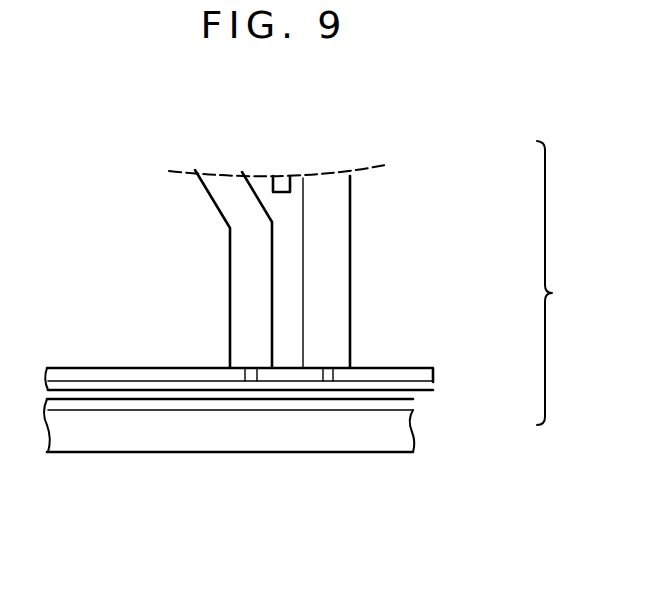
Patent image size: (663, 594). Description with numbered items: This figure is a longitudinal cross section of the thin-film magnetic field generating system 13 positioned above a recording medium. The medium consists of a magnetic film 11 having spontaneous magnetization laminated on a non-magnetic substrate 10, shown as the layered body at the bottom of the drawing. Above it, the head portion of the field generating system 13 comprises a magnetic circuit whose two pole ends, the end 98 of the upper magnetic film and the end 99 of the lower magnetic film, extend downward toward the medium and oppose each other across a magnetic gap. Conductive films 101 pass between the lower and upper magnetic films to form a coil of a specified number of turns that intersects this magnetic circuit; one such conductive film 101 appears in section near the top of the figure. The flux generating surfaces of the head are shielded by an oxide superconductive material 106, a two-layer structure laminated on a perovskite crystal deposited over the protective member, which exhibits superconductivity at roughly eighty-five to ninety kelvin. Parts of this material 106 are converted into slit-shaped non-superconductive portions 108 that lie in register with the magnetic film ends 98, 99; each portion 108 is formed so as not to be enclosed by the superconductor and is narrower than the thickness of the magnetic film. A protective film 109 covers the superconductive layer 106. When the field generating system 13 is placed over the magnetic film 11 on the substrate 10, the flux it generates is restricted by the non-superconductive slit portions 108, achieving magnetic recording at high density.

The non-magnetic substrate 10 is at (390, 443).
The magnetic film 11 is at (413, 403).
The field generating system 13 is at (564, 283).
The end of upper magnetic film 98 is at (227, 282).
The end of lower magnetic film 99 is at (343, 242).
The conductive films 101 is at (283, 175).
The oxide superconductive material 106 is at (415, 368).
The non-superconductive portions 108 is at (247, 382).
The protective film 109 is at (434, 386).